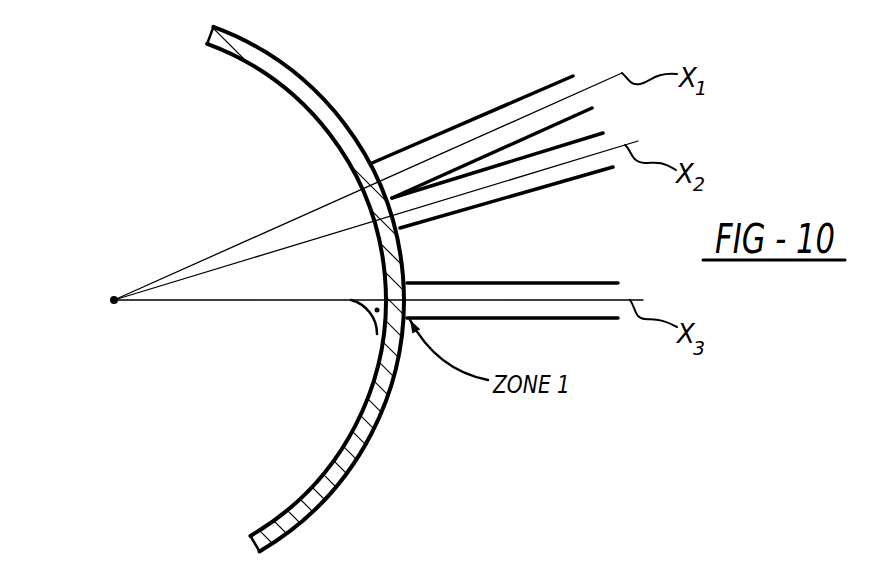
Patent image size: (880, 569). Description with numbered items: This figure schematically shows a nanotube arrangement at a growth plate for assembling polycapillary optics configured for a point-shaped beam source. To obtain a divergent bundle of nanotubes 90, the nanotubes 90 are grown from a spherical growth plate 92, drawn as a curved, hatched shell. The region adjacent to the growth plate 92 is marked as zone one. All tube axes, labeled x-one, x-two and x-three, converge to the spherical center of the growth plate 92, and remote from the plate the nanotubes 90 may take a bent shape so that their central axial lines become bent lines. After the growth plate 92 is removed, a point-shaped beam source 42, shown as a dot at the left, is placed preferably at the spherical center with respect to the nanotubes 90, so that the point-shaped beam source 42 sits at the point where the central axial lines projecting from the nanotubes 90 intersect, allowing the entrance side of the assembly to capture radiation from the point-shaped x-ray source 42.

The point-shaped beam source 42 is at (114, 300).
The nanotubes 90 is at (488, 110).
The spherical growth plate 92 is at (362, 460).